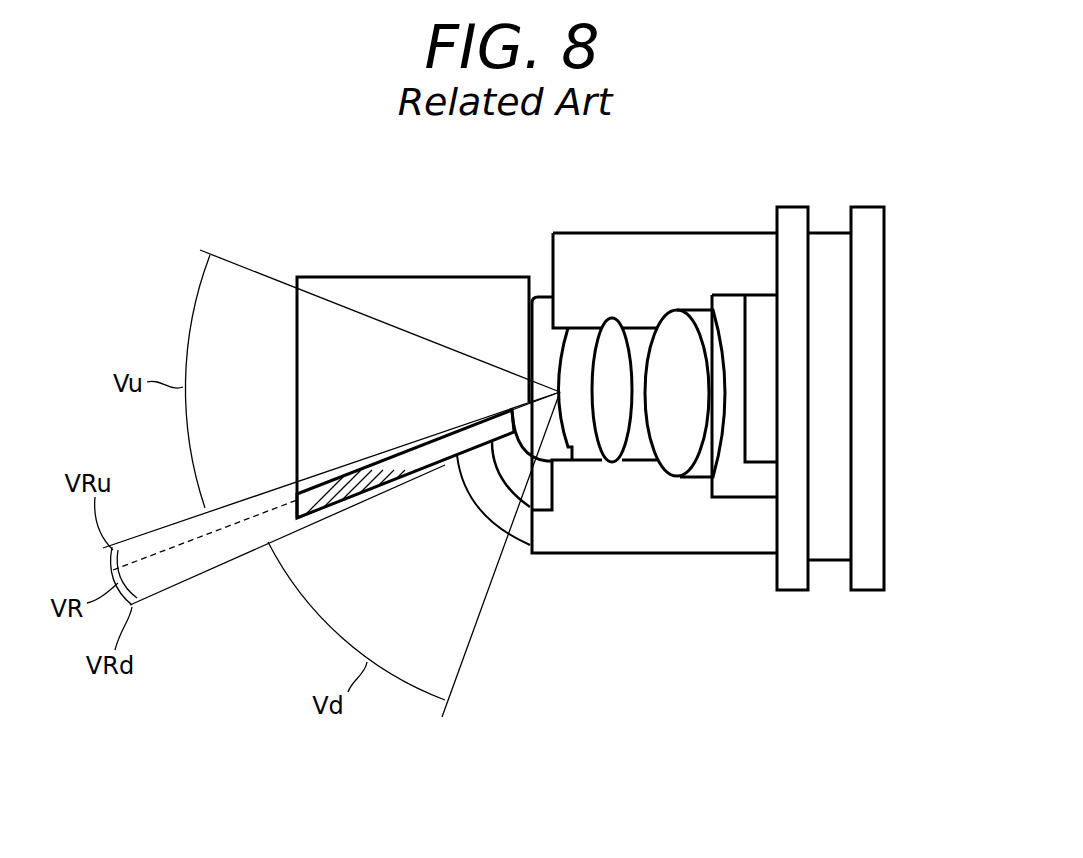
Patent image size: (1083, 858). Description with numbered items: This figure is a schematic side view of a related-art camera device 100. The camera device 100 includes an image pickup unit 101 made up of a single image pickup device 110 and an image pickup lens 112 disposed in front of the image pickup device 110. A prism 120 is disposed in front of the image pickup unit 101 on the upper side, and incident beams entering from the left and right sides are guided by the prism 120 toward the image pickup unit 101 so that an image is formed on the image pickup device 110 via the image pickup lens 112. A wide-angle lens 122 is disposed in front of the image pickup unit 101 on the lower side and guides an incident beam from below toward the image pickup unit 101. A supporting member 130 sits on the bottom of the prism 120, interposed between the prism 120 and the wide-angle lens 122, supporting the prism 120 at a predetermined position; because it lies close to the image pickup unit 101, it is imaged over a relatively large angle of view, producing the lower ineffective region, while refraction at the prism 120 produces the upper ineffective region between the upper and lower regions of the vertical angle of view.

The camera device 100 is at (722, 206).
The image pickup unit 101 is at (667, 481).
The image pickup device 110 is at (757, 457).
The image pickup lens 112 is at (558, 450).
The prism 120 is at (418, 283).
The wide-angle lens 122 is at (488, 502).
The supporting member 130 is at (365, 493).